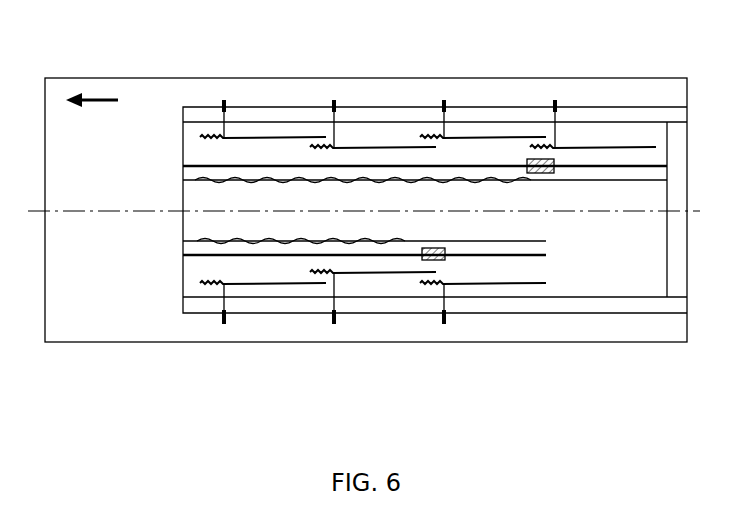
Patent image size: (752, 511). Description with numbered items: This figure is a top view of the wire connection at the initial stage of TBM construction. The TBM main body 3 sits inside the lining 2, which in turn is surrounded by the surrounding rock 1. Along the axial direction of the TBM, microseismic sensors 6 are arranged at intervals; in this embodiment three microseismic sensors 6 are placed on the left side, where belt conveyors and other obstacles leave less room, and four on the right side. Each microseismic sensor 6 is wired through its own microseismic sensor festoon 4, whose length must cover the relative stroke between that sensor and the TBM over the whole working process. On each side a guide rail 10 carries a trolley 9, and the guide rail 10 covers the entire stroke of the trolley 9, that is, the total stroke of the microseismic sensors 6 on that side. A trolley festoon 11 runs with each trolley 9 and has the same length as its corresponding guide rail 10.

The surrounding rock 1 is at (168, 93).
The lining 2 is at (195, 307).
The TBM main body 3 is at (568, 272).
The microseismic sensor festoon 4 is at (307, 135).
The microseismic sensor 6 is at (225, 103).
The trolley 9 is at (437, 247).
The guide rail 10 is at (237, 255).
The trolley festoon 11 is at (388, 240).